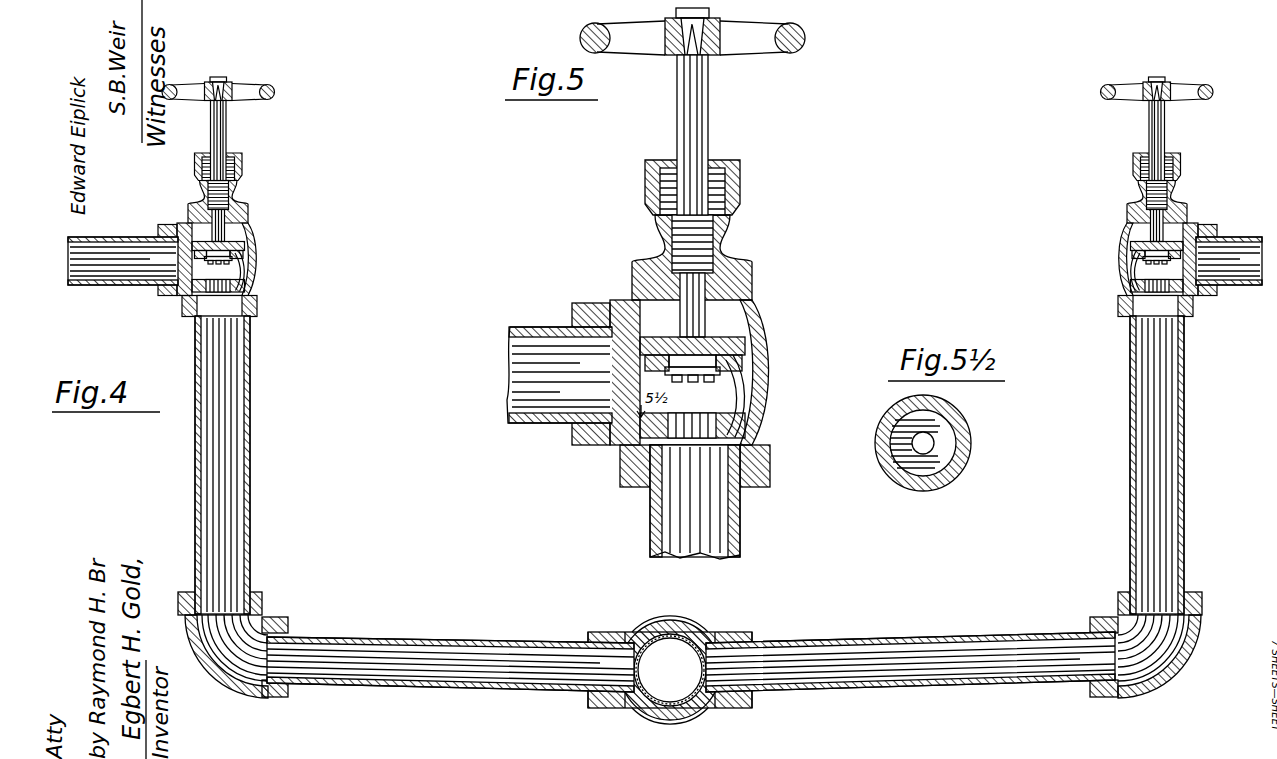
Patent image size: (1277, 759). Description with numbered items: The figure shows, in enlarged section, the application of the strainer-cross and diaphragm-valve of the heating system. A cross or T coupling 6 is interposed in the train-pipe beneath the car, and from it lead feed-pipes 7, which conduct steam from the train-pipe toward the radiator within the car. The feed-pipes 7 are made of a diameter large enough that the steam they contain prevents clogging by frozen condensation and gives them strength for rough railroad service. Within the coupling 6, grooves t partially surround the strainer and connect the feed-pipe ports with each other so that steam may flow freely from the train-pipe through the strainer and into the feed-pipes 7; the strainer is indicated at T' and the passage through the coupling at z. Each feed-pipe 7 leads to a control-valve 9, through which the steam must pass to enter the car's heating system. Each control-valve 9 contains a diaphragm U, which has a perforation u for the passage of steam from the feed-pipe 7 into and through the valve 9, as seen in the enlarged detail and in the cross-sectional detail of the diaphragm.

In FIG. 4, the feed-pipe 7 is at (147, 288).
In FIG. 5, the feed-pipe 7 is at (543, 425).
In FIG. 4, the control-valve 9 is at (264, 281).
In FIG. 5, the control-valve 9 is at (762, 345).
In FIG. 4, the diaphragm U is at (259, 293).
In FIG. 5, the diaphragm U is at (765, 410).
The diaphragm U is at (958, 421).
In FIG. 4, the perforation u is at (1172, 272).
In FIG. 5, the perforation u is at (692, 435).
The perforation u is at (926, 442).
In FIG. 4, the grooves t is at (627, 645).
In FIG. 4, the tee fitting T' is at (670, 658).
In FIG. 4, the cross or T coupling 6 is at (742, 633).
In FIG. 4, the tee opening z is at (640, 667).